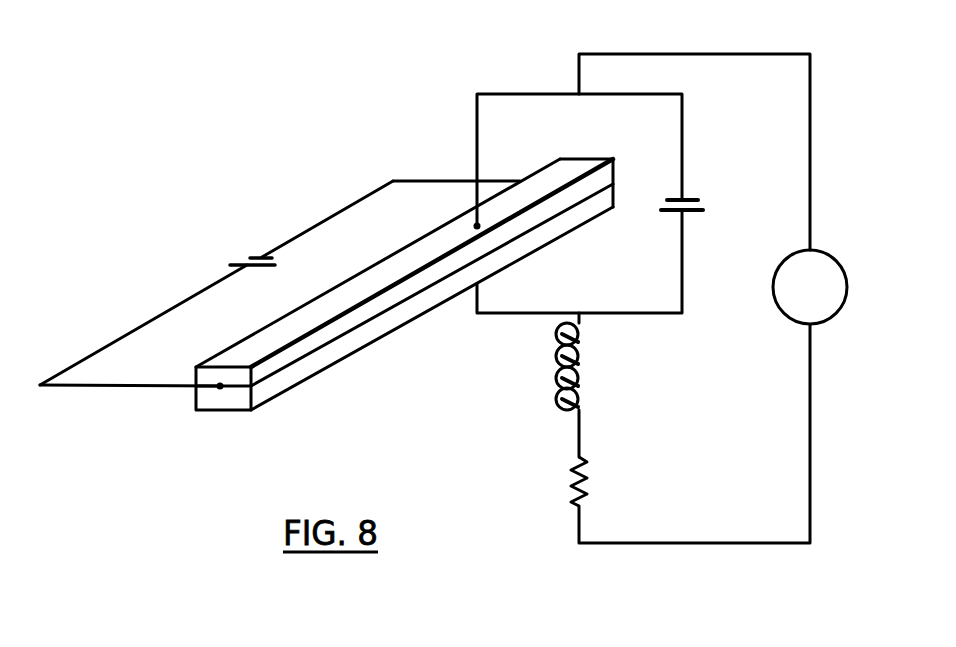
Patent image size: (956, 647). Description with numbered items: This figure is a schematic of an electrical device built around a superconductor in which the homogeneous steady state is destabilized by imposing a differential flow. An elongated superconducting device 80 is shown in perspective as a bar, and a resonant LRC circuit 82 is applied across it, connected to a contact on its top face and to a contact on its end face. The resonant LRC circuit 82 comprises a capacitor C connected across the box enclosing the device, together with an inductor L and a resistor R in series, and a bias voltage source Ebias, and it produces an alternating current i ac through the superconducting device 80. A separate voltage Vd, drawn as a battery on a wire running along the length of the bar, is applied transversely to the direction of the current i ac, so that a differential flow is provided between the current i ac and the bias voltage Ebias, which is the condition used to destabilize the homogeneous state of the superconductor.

The superconducting device 80 is at (395, 253).
The resonant LRC circuit 82 is at (671, 291).
The voltage V_d Vd is at (280, 283).
The capacitor C is at (695, 205).
The inductor L is at (580, 366).
The resistor R is at (591, 481).
The bias voltage E_bias Ebias is at (810, 287).